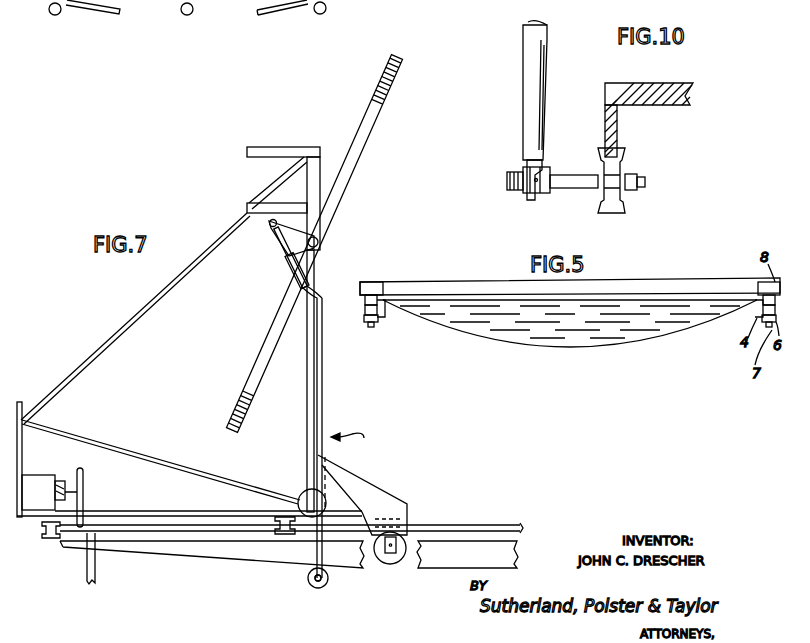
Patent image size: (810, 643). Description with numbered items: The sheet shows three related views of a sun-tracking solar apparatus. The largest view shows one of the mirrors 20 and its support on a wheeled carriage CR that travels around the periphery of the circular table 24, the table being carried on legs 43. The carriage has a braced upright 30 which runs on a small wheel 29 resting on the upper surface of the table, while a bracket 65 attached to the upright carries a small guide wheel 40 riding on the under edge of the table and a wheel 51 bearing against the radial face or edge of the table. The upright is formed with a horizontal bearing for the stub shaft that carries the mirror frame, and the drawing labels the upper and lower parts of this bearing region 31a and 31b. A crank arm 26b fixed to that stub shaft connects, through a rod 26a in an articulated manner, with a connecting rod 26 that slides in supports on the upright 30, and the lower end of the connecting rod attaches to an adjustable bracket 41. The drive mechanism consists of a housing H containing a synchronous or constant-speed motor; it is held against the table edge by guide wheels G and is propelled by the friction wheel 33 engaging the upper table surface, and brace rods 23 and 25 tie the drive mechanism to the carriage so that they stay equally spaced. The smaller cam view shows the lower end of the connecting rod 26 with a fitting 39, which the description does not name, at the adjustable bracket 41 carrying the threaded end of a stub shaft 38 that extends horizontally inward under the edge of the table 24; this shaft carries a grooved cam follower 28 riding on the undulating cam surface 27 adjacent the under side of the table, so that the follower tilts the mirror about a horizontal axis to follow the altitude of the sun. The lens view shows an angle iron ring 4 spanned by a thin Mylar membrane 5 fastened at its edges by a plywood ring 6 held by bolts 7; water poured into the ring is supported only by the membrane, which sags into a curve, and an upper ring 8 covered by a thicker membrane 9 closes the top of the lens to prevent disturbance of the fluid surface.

In FIG. 7, the mirrors 20 is at (376, 128).
In FIG. 7, the brace rod 23 is at (118, 325).
In FIG. 7, the brace rod 25 is at (125, 446).
In FIG. 7, the connecting rod 26 is at (317, 388).
In FIG. 10, the connecting rod 26 is at (548, 65).
In FIG. 7, the rod 26a is at (291, 268).
In FIG. 7, the crank arm 26b is at (285, 242).
In FIG. 7, the grooved cam follower 28 is at (310, 583).
In FIG. 10, the grooved cam follower 28 is at (610, 215).
In FIG. 7, the small wheels 29 is at (300, 494).
In FIG. 7, the upright 30 is at (321, 184).
In FIG. 7, the upper bracket arm 31a is at (277, 136).
In FIG. 7, the lower bracket arm 31b is at (248, 203).
In FIG. 7, the friction wheel 33 is at (84, 480).
In FIG. 7, the small guide wheel 40 is at (393, 565).
In FIG. 7, the adjustable bracket 41 is at (318, 582).
In FIG. 10, the adjustable bracket 41 is at (528, 199).
In FIG. 7, the legs 43 is at (94, 574).
In FIG. 7, the wheel 51 is at (285, 536).
In FIG. 7, the bracket 65 is at (380, 492).
In FIG. 7, the guide wheels G is at (42, 532).
In FIG. 7, the housing H is at (32, 478).
In FIG. 7, the carriage CR is at (351, 428).
In FIG. 10, the table 24 is at (662, 83).
In FIG. 10, the cam track 27 is at (605, 127).
In FIG. 10, the stub shaft 38 is at (645, 182).
In FIG. 10, the rod clamp 39 is at (527, 165).
In FIG. 5, the angle iron ring 4 is at (384, 318).
In FIG. 5, the membrane 5 is at (570, 347).
In FIG. 5, the plywood ring 6 is at (364, 318).
In FIG. 5, the bolts 7 is at (371, 328).
In FIG. 5, the ring 8 is at (365, 282).
In FIG. 5, the membrane 9 is at (455, 282).